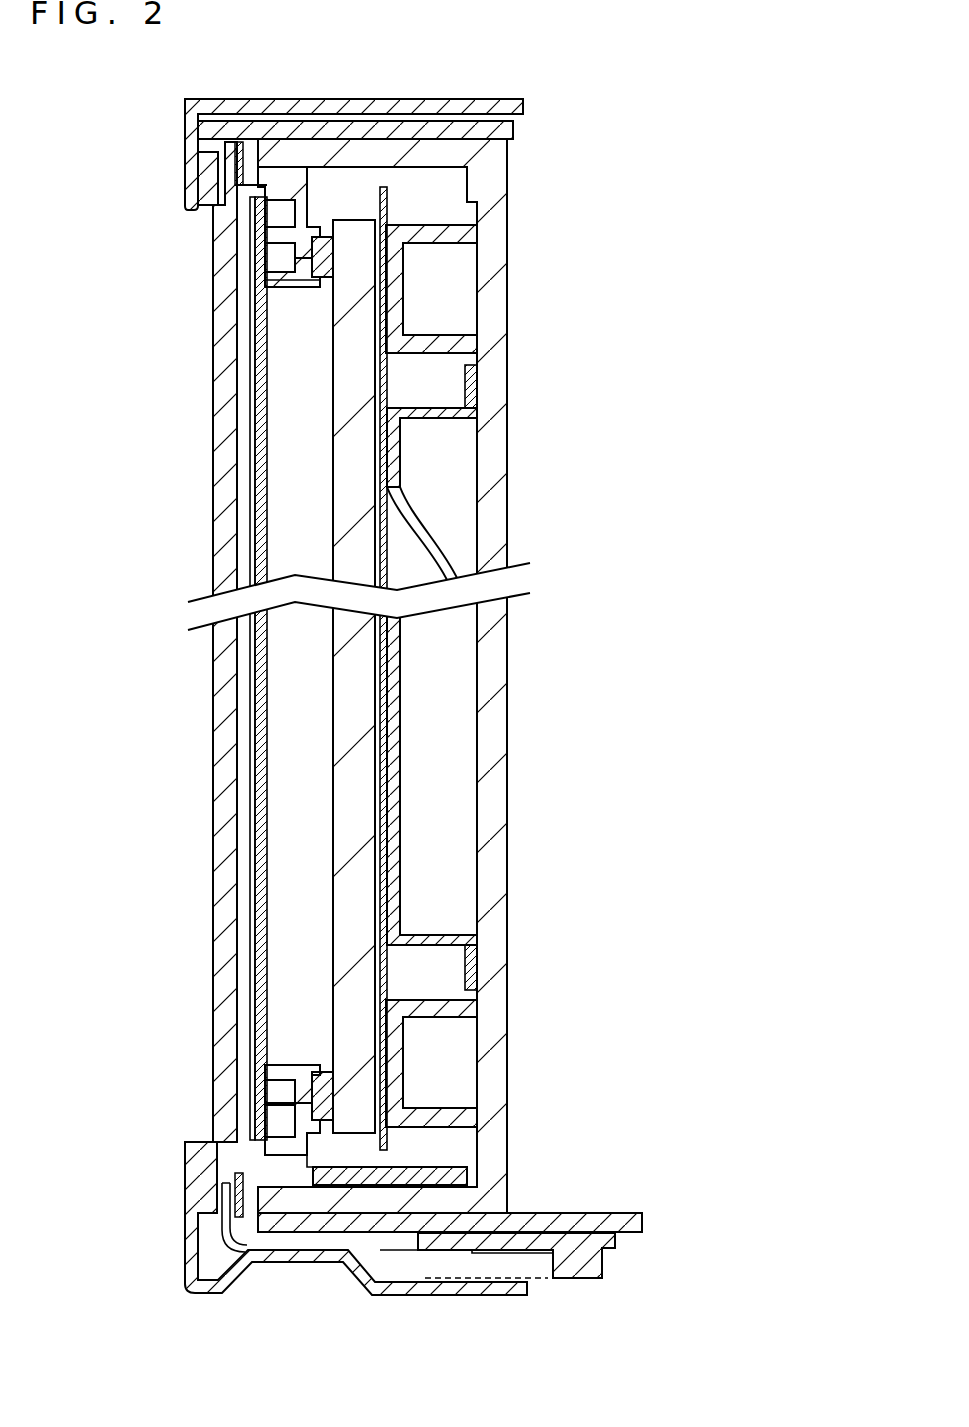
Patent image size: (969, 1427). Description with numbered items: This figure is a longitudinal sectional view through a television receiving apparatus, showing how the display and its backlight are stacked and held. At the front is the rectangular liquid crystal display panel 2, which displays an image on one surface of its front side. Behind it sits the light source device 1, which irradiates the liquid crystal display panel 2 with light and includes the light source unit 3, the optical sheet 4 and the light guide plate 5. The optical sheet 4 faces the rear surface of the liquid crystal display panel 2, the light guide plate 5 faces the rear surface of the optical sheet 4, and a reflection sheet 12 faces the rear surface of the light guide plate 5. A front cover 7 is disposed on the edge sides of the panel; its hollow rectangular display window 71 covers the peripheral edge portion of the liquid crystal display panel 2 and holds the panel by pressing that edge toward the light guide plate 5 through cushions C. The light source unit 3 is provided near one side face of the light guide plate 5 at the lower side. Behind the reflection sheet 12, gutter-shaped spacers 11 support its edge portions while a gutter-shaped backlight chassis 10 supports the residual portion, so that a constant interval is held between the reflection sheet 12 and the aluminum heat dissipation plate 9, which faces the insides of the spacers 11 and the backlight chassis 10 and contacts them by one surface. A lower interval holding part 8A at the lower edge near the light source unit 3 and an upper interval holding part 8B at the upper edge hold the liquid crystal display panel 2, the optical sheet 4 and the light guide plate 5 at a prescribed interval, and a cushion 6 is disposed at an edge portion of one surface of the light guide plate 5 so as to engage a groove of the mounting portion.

The light source device 1 is at (227, 676).
The liquid crystal display panel 2 is at (213, 780).
The light source unit 3 is at (292, 1147).
The optical sheet 4 is at (328, 1078).
The light guide plate 5 is at (313, 1103).
The cushion 6 is at (330, 278).
The front cover 7 is at (265, 99).
The display window 71 is at (198, 208).
The lower interval holding part 8A is at (643, 1219).
The upper interval holding part 8B is at (523, 130).
The heat dissipation plate 9 is at (508, 1022).
The backlight chassis 10 is at (455, 428).
The spacer 11 is at (480, 330).
The reflection sheet 12 is at (380, 387).
The cushion C is at (206, 232).